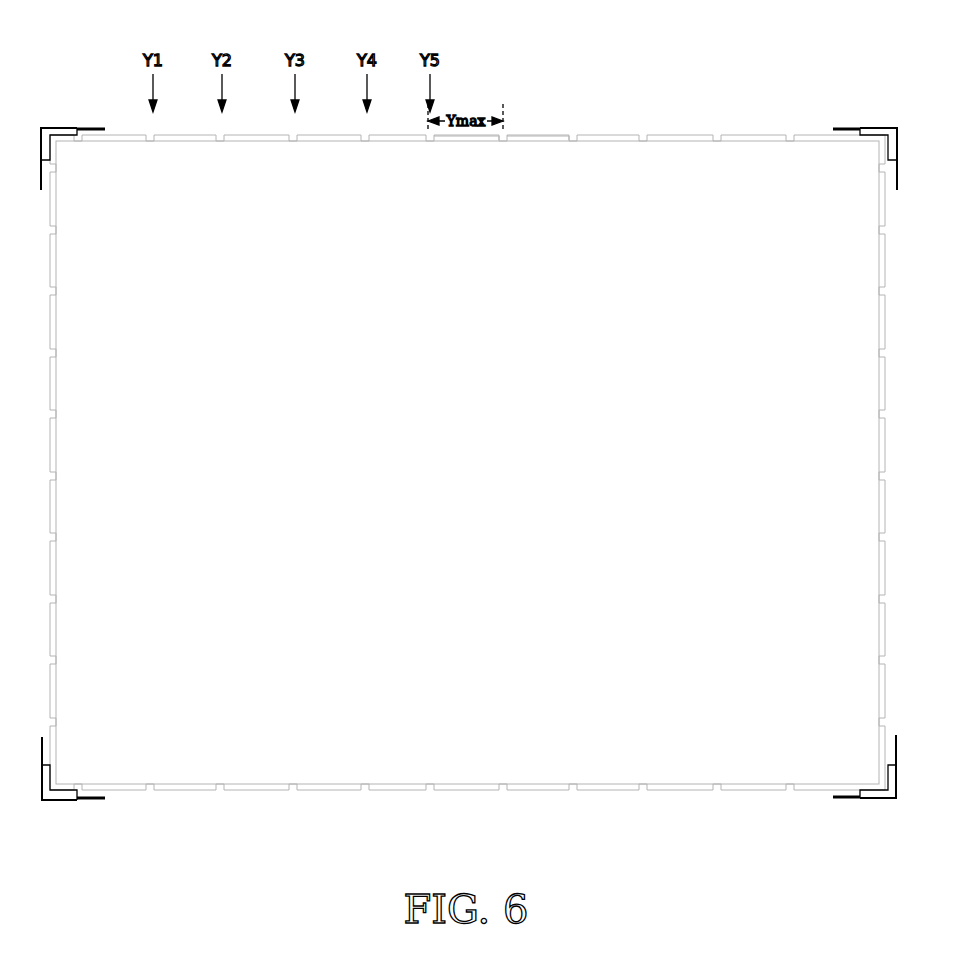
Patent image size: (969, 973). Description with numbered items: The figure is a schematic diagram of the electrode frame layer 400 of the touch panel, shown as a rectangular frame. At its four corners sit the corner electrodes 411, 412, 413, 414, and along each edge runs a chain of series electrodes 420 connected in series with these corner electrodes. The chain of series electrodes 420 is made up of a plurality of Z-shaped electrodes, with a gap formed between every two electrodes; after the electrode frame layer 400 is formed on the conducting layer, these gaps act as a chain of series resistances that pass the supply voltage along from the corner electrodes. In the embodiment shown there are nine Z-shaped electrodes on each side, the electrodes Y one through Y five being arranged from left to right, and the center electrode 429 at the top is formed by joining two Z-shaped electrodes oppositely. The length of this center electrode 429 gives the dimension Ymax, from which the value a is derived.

The electrode frame layer 400 is at (612, 93).
The corner electrode 411 is at (74, 128).
The corner electrode 412 is at (853, 127).
The corner electrode 413 is at (847, 800).
The corner electrode 414 is at (67, 800).
The chain of series electrodes 420 is at (532, 133).
The center electrode 429 is at (460, 141).